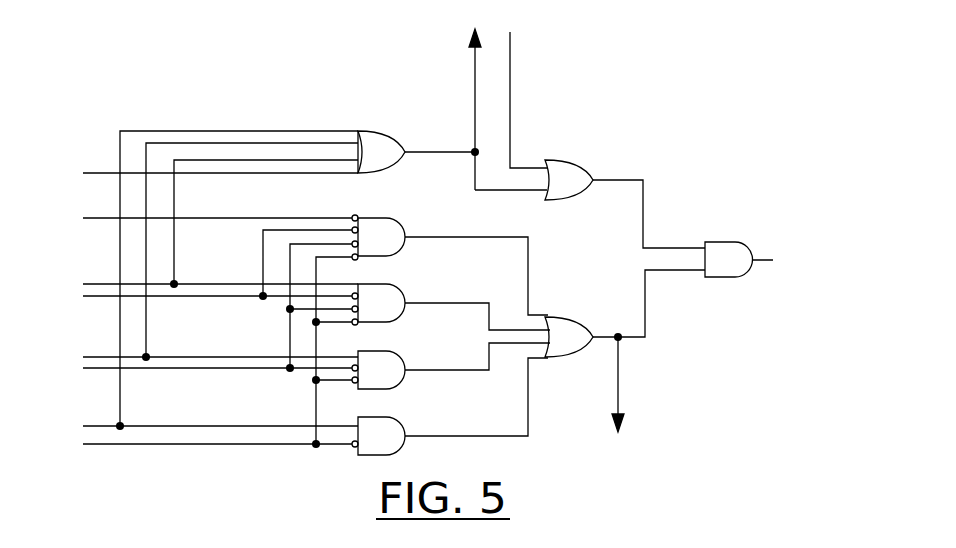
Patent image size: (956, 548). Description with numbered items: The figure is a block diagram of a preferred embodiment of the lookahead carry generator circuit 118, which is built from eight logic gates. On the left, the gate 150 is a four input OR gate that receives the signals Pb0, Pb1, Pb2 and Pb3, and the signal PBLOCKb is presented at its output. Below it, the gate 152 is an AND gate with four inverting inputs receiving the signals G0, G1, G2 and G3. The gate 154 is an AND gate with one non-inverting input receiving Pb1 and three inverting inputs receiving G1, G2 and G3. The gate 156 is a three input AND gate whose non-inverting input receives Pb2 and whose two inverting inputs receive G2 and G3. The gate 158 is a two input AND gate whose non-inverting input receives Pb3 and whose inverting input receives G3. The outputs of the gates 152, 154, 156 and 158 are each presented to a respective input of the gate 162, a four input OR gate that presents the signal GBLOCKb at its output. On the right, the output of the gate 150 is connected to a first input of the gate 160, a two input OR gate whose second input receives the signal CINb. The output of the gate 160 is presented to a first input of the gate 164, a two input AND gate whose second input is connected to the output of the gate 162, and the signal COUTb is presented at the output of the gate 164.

The circuit 118 is at (281, 37).
The gate 150 is at (383, 134).
The gate 152 is at (383, 219).
The gate 154 is at (383, 285).
The gate 156 is at (383, 352).
The gate 158 is at (383, 418).
The gate 160 is at (558, 161).
The gate 162 is at (558, 318).
The gate 164 is at (733, 242).